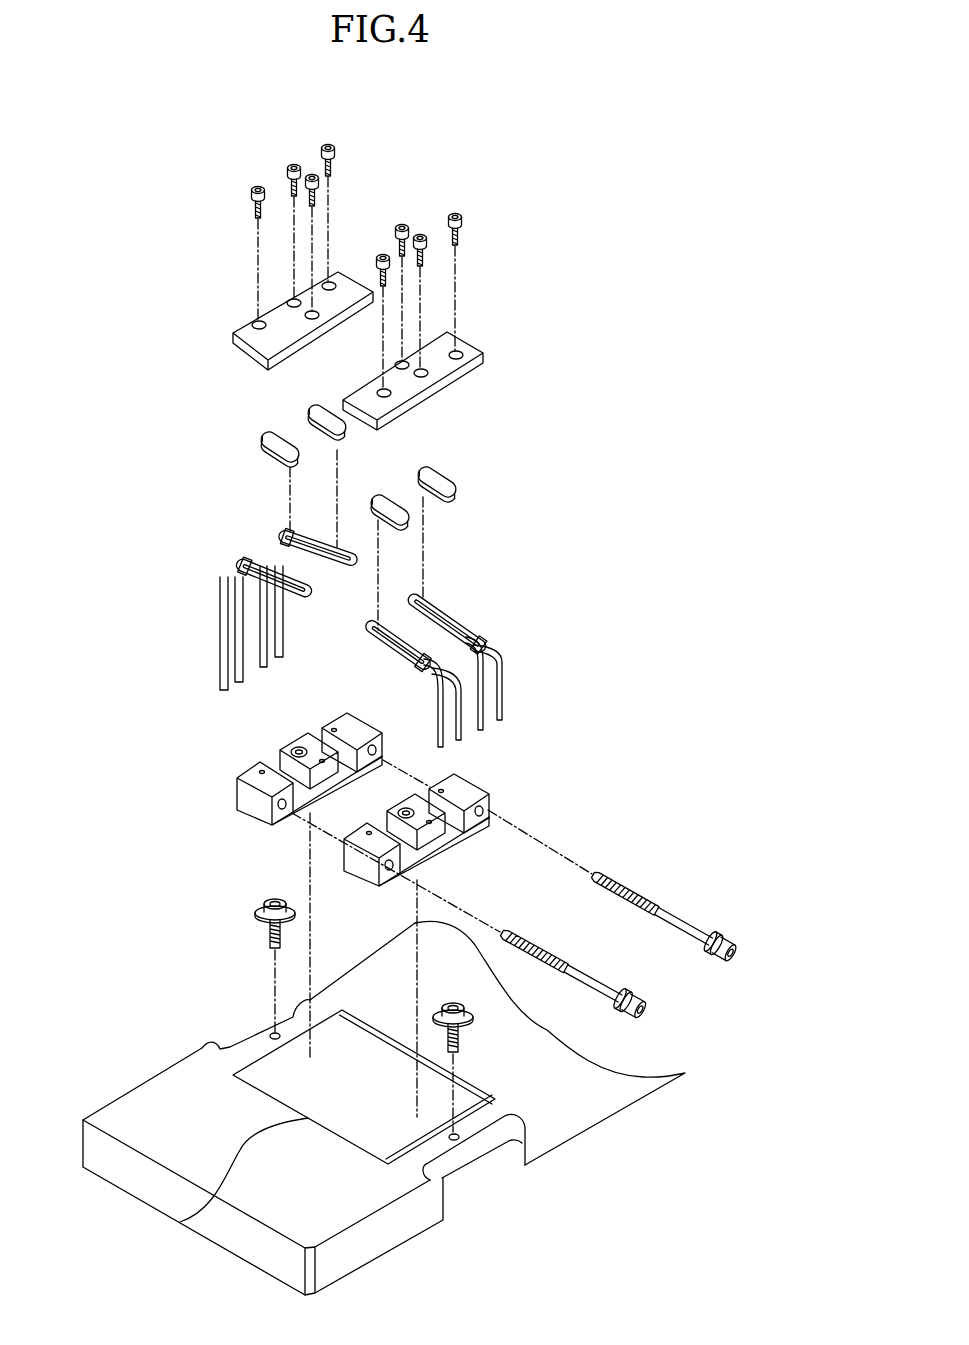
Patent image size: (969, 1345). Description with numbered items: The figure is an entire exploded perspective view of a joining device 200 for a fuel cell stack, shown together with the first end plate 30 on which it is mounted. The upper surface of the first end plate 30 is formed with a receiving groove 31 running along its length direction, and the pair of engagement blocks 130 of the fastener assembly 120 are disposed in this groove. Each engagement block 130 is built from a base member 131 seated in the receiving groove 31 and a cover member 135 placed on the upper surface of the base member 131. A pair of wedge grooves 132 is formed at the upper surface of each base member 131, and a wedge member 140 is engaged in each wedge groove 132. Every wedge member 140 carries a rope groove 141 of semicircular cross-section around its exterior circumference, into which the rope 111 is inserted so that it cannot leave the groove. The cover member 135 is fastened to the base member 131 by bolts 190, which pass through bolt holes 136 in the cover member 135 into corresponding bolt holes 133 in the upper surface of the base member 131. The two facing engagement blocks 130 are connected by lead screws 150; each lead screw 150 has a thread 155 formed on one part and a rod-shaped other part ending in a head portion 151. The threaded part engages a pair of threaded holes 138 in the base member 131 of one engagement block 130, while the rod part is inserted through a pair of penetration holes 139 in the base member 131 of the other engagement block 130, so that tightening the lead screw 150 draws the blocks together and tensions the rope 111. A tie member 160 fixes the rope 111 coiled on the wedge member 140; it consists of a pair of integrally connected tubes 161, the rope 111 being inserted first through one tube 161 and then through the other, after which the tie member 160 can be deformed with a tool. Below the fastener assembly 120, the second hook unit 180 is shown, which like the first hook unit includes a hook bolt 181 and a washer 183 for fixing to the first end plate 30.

The joining device 200 is at (387, 118).
The first end plate 30 is at (138, 1085).
The receiving groove 31 is at (180, 1222).
The rope 111 is at (503, 695).
The fastener assembly 120 is at (502, 410).
The engagement block 130 is at (500, 784).
The base member 131 is at (244, 798).
The wedge groove 132 is at (293, 812).
The bolt hole 133 is at (333, 729).
The cover member 135 is at (347, 353).
The bolt hole 136 is at (252, 322).
The threaded hole 138 is at (385, 748).
The penetration hole 139 is at (482, 808).
The wedge member 140 is at (442, 480).
The rope groove 141 is at (262, 452).
The lead screw 150 is at (690, 906).
The head portion 151 is at (732, 932).
The thread 155 is at (627, 882).
The tie member 160 is at (482, 625).
The tube 161 is at (282, 547).
The second hook unit 180 is at (246, 929).
The hook bolt 181 is at (266, 908).
The washer 183 is at (270, 942).
The bolt 190 is at (462, 227).